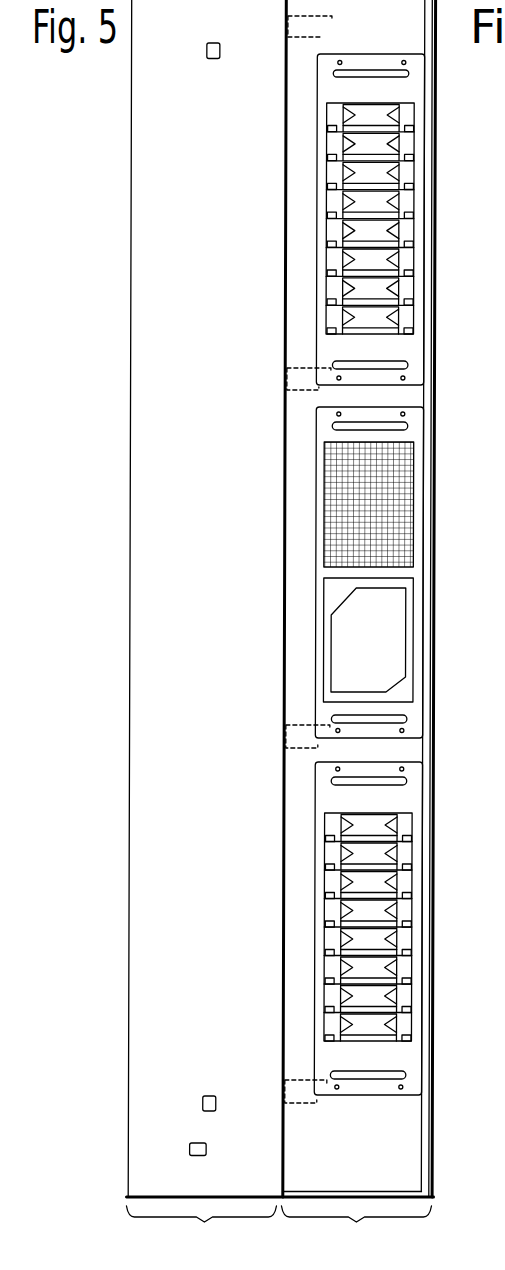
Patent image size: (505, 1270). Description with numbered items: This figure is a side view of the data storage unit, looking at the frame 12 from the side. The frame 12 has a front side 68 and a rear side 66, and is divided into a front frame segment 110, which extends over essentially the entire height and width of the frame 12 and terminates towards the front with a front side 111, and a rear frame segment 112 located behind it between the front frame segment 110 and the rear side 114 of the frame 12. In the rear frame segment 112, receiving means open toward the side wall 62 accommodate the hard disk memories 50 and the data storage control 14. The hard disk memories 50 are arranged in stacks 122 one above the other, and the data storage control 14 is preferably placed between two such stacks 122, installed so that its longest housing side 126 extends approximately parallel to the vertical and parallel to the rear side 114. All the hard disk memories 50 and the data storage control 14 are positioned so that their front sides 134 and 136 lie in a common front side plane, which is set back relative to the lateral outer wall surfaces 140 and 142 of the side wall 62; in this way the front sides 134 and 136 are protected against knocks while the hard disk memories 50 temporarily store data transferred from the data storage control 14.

The frame 12 is at (109, 203).
The data storage control 14 is at (410, 643).
The hard disk memories 50 is at (408, 172).
The side wall 62 is at (146, 348).
The rear side of the frame 66 is at (447, 90).
The front side of the frame 68 is at (126, 86).
The front frame segment 110 is at (201, 1231).
The front side 111 is at (128, 1056).
The rear frame segment 112 is at (356, 1231).
The rear side of the frame 114 is at (434, 392).
The stacks 122 is at (418, 283).
The longest housing side 126 is at (424, 517).
The front sides 134 is at (420, 227).
The front side 136 is at (415, 575).
The lateral outer wall surface 140 is at (429, 1111).
The lateral outer wall surface 142 is at (150, 950).